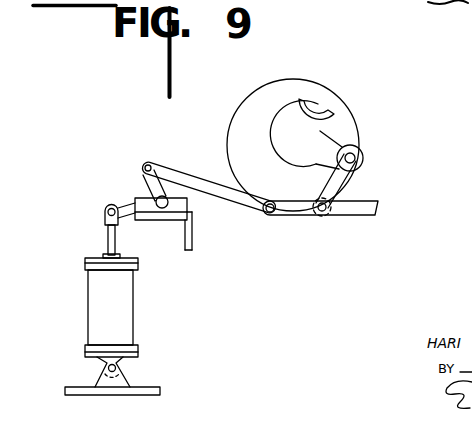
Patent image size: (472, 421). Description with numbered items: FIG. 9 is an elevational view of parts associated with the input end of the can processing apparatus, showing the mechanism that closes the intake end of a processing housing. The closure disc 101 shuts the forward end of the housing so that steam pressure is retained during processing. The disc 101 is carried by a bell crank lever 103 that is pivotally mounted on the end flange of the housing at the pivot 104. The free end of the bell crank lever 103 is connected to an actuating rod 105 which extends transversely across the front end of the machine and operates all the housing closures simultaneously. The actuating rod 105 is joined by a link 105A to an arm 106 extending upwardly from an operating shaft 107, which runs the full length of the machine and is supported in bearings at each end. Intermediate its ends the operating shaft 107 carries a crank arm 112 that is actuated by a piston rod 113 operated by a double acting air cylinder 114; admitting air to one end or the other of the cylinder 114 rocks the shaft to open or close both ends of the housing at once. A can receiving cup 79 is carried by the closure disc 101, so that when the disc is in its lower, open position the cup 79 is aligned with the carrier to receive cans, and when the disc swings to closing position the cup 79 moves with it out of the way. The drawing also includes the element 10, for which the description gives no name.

The disc 10 is at (347, 114).
The can receiving cup 79 is at (311, 110).
The closure disc 101 is at (313, 139).
The bell crank lever 103 is at (338, 184).
The pivot 104 is at (356, 158).
The actuating rod 105 is at (360, 212).
The link 105A is at (183, 173).
The arm 106 is at (123, 201).
The operating shaft 107 is at (190, 216).
The crank arm 112 is at (122, 207).
The piston rod 113 is at (113, 243).
The double acting air cylinder 114 is at (127, 318).